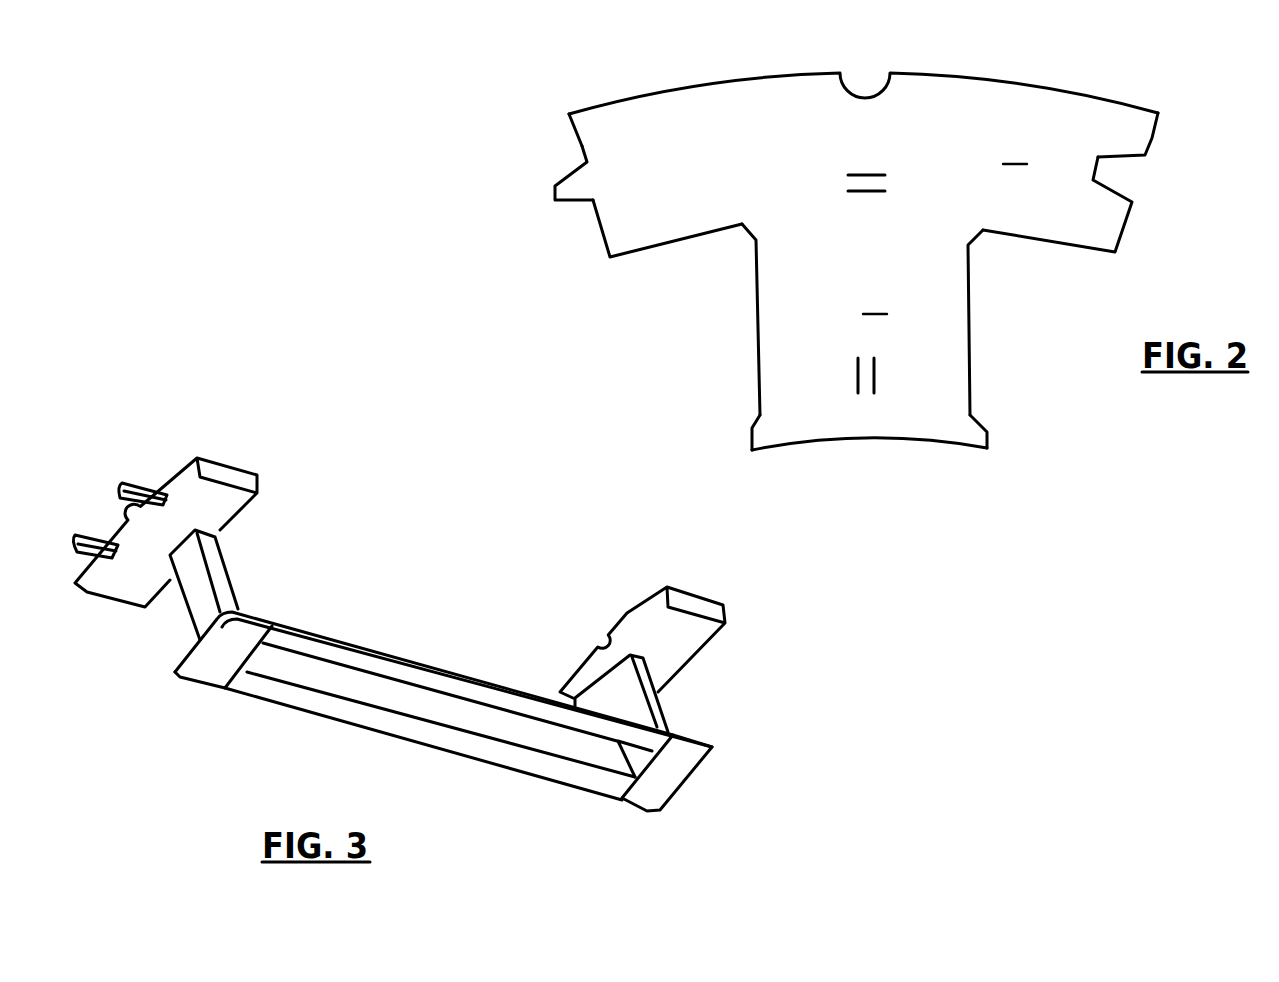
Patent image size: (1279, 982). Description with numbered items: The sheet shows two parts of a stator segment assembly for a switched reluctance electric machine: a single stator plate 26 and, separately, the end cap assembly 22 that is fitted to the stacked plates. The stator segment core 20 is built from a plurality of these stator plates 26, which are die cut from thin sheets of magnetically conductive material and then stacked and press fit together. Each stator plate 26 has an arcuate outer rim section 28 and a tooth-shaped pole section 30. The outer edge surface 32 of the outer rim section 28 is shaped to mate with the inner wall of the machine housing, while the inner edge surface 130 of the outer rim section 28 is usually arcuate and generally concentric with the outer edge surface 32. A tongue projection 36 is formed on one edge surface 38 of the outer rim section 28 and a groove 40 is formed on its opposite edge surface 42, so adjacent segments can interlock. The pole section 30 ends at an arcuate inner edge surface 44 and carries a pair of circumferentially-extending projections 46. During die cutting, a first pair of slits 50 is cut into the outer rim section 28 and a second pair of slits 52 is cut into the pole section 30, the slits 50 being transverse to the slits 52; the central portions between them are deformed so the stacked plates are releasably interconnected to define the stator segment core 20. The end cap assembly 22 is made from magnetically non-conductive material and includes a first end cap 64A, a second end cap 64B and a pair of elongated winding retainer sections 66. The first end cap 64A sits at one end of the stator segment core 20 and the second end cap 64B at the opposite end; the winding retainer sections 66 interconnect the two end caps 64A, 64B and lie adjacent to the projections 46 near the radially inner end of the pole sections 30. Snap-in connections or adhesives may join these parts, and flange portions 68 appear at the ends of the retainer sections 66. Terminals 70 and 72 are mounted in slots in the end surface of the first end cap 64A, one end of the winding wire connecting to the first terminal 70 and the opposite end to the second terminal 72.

In FIG. 2, the stator segment core 20 is at (1070, 56).
In FIG. 2, the stator plate 26 is at (750, 115).
In FIG. 2, the arcuate outer rim section 28 is at (1015, 152).
In FIG. 2, the tooth-shaped pole section 30 is at (875, 302).
In FIG. 2, the outer edge surface 32 is at (653, 90).
In FIG. 2, the tongue projection 36 is at (555, 200).
In FIG. 2, the edge surface 38 is at (582, 146).
In FIG. 2, the groove 40 is at (1098, 176).
In FIG. 2, the opposite edge surface 42 is at (1155, 138).
In FIG. 2, the arcuate inner edge surface 44 is at (923, 440).
In FIG. 2, the circumferentially-extending projections 46 is at (750, 433).
In FIG. 2, the first pair of slits 50 is at (867, 173).
In FIG. 2, the second pair of slits 52 is at (857, 367).
In FIG. 2, the inner edge surface 130 is at (673, 242).
In FIG. 3, the end cap assembly 22 is at (88, 502).
In FIG. 3, the first end cap 64A is at (233, 518).
In FIG. 3, the second end cap 64B is at (712, 643).
In FIG. 3, the winding retainer sections 66 is at (383, 667).
In FIG. 3, the end flanges 68 is at (200, 677).
In FIG. 3, the first terminal 70 is at (72, 540).
In FIG. 3, the second terminal 72 is at (132, 483).